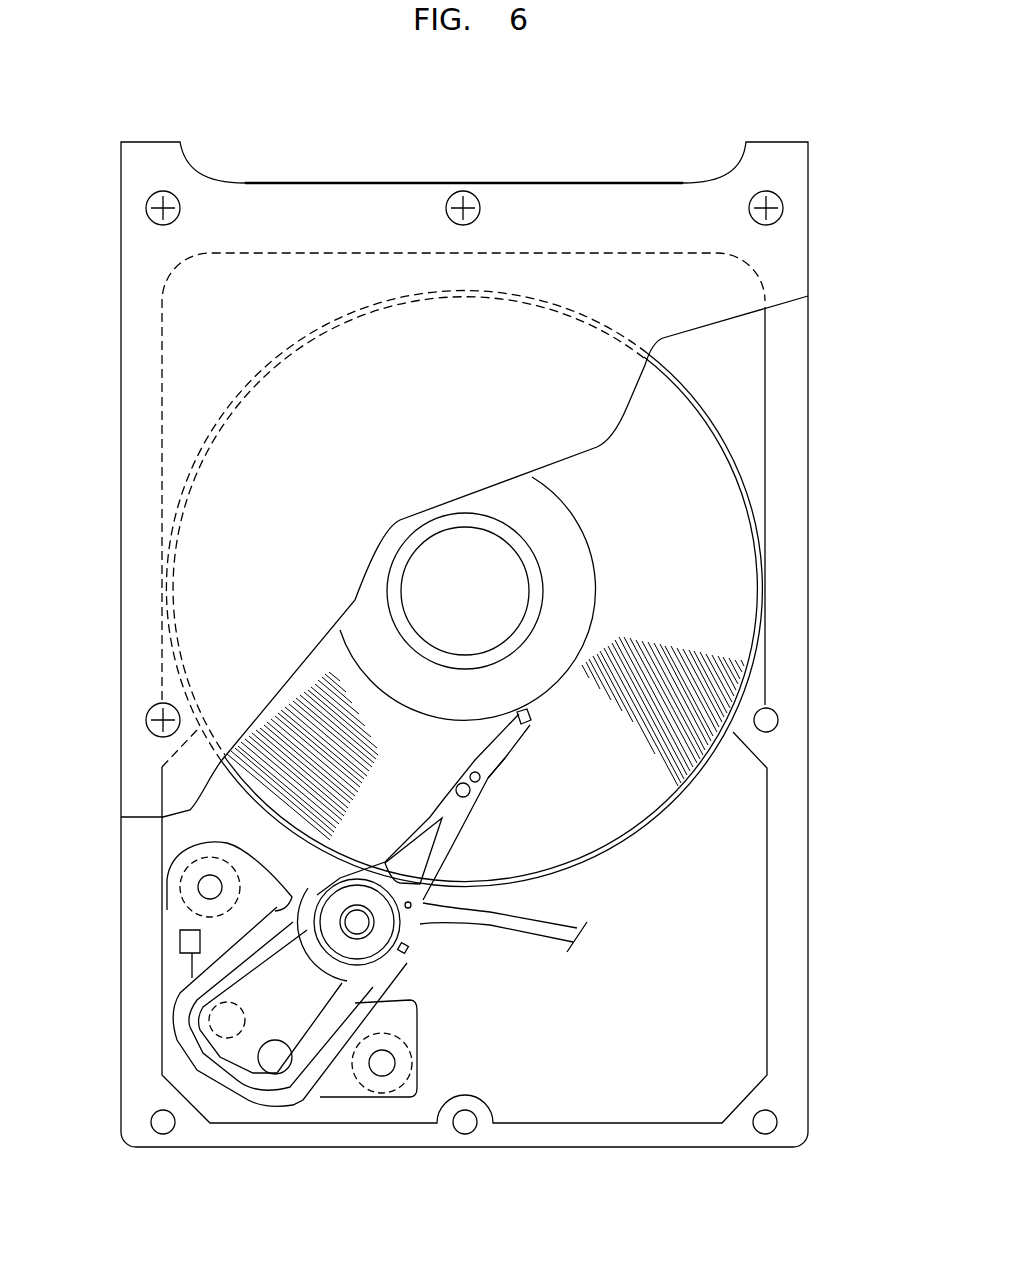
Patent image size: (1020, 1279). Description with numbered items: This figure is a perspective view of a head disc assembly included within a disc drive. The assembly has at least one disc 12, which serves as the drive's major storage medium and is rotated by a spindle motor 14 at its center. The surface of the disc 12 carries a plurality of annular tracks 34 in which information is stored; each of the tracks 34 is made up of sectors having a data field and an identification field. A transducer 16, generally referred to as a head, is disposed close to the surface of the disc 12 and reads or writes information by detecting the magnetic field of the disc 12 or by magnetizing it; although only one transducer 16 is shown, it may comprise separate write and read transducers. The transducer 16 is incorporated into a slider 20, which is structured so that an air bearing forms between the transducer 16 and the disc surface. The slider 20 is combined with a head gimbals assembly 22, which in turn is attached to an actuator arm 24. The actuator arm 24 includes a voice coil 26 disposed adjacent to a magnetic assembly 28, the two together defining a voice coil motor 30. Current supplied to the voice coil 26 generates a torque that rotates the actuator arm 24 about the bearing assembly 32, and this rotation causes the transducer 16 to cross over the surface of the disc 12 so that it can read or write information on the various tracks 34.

The disc 12 is at (735, 517).
The spindle motor 14 is at (440, 567).
The transducer 16 is at (527, 725).
The slider 20 is at (477, 852).
The head gimbals assembly 22 is at (508, 760).
The actuator arm 24 is at (270, 940).
The voice coil 26 is at (197, 1010).
The magnetic assembly 28 is at (217, 953).
The voice coil motor 30 is at (330, 1082).
The bearing assembly 32 is at (373, 937).
The tracks 34 is at (322, 710).